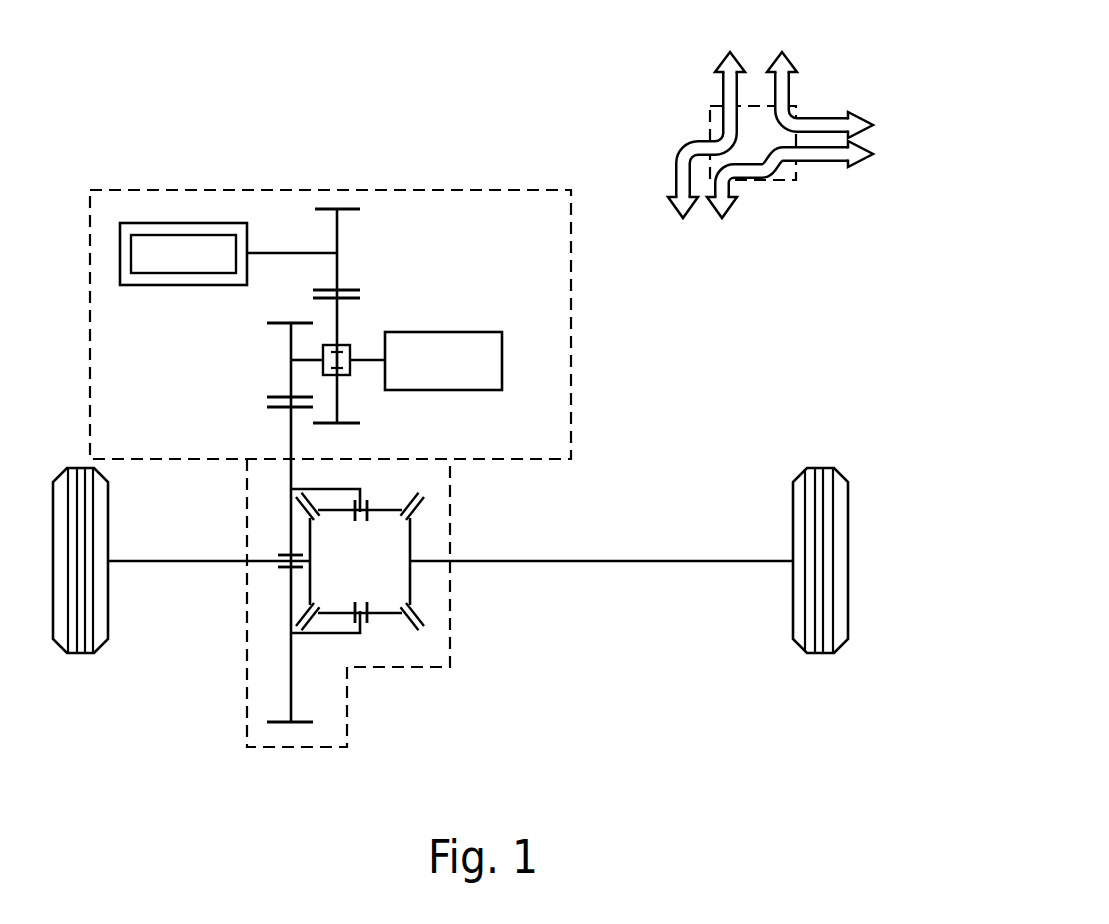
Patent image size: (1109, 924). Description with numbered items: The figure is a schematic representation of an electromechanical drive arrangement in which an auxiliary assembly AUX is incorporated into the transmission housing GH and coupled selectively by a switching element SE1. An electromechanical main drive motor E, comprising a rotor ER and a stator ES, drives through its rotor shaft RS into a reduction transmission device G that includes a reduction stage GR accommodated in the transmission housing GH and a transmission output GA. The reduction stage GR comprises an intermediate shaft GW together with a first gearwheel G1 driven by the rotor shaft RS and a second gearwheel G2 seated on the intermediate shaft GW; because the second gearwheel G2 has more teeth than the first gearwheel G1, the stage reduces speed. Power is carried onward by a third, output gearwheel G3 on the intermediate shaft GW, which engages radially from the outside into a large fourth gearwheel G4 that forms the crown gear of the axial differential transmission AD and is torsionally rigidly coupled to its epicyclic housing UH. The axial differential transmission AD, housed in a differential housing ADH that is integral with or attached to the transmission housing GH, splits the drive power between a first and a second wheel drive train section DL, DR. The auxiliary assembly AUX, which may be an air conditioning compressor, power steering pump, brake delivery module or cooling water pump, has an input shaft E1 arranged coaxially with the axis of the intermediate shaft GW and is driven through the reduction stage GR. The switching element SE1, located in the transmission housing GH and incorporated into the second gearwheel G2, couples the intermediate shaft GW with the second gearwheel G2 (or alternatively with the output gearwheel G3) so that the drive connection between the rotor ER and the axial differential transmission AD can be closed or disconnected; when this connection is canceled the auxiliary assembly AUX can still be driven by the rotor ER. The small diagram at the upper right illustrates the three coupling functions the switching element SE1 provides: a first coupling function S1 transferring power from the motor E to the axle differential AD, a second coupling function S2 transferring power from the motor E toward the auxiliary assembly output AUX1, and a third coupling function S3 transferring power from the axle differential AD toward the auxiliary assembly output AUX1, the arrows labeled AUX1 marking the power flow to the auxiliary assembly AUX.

The reduction transmission device G is at (455, 407).
The transmission housing GH is at (571, 315).
The electromechanical main drive motor E is at (756, 45).
The stator ES is at (159, 194).
The rotor ER is at (148, 236).
The rotor shaft RS is at (291, 193).
The reduction stage GR is at (499, 407).
The first gearwheel G1 is at (345, 209).
The second gearwheel G2 is at (313, 290).
The output gearwheel G3 is at (278, 326).
The intermediate shaft GW is at (305, 362).
The switching element SE1 is at (338, 345).
The input shaft E1 is at (360, 372).
The auxiliary assembly AUX is at (443, 361).
The differential housing ADH is at (450, 630).
The axial differential transmission AD is at (459, 526).
The epicyclic housing UH is at (343, 635).
The large gearwheel G4 is at (263, 691).
The transmission output GA is at (280, 724).
The first wheel drive train section DL is at (190, 563).
The second wheel drive train section DR is at (737, 563).
The first coupling function S1 is at (736, 134).
The second coupling function S2 is at (815, 98).
The third coupling function S3 is at (785, 175).
The auxiliary drive output AUX1 is at (899, 139).